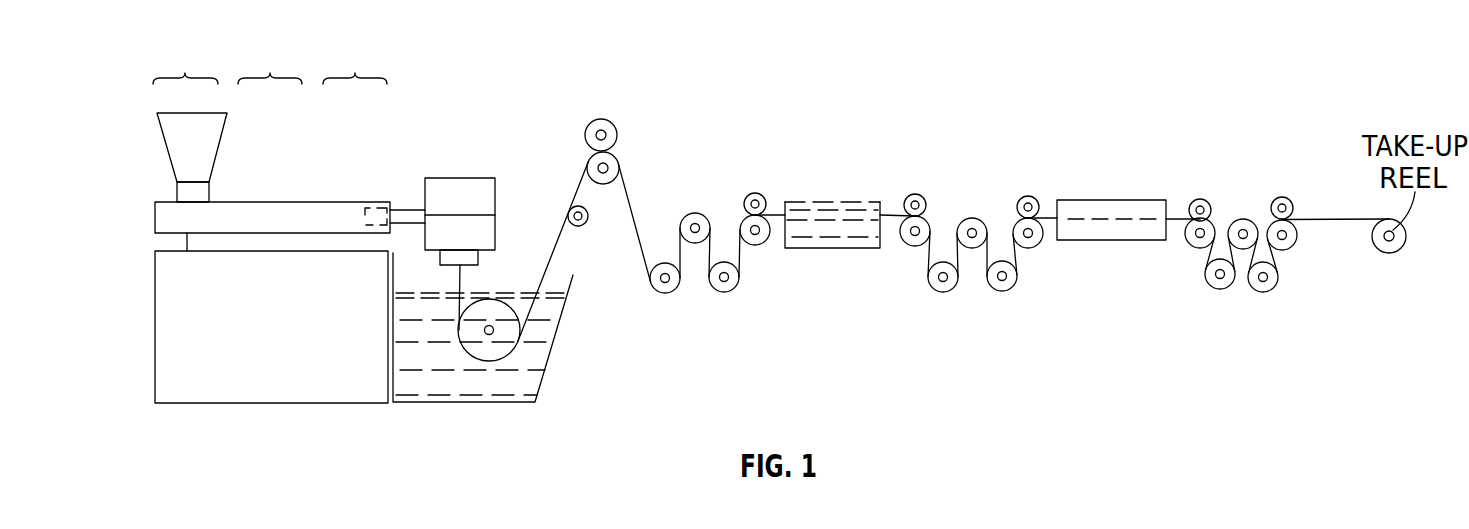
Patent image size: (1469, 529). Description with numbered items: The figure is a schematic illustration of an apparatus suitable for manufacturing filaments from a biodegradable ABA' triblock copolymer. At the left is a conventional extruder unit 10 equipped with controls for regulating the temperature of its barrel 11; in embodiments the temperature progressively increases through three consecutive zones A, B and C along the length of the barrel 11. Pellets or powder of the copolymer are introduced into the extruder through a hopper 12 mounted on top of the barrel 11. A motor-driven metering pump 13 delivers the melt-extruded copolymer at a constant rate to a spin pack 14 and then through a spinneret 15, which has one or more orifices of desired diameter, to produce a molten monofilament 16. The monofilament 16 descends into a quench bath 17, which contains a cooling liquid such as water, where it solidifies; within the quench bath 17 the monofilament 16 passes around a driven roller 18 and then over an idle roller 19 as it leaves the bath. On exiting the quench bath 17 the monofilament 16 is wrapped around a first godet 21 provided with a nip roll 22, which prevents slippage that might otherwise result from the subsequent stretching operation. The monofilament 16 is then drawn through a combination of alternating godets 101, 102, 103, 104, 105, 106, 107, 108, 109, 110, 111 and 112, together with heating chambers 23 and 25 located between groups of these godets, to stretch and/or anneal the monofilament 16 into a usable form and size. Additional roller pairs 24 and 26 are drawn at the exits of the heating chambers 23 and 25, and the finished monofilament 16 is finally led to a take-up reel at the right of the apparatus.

The extruder unit 10 is at (237, 176).
The barrel 11 is at (320, 212).
The hopper 12 is at (165, 148).
The metering pump 13 is at (462, 190).
The spin pack 14 is at (483, 232).
The spinneret 15 is at (463, 257).
The monofilament 16 is at (457, 270).
The quench bath 17 is at (540, 363).
The driven roller 18 is at (473, 343).
The idle roller 19 is at (588, 217).
The first godet 21 is at (613, 162).
The nip roll 22 is at (608, 118).
The heating chamber 23 is at (842, 242).
The nip roller pair 24 is at (915, 243).
The heating chamber 25 is at (1098, 232).
The nip roller pair 26 is at (1195, 245).
The godet 101 is at (672, 288).
The godet 102 is at (697, 222).
The godet 103 is at (727, 288).
The godet 104 is at (755, 240).
The godet 105 is at (940, 287).
The godet 106 is at (968, 222).
The godet 107 is at (1002, 287).
The godet 108 is at (1027, 247).
The godet 109 is at (1217, 283).
The godet 110 is at (1243, 223).
The godet 111 is at (1265, 285).
The godet 112 is at (1287, 243).
The zone A is at (185, 60).
The zone B is at (270, 60).
The zone C is at (355, 60).